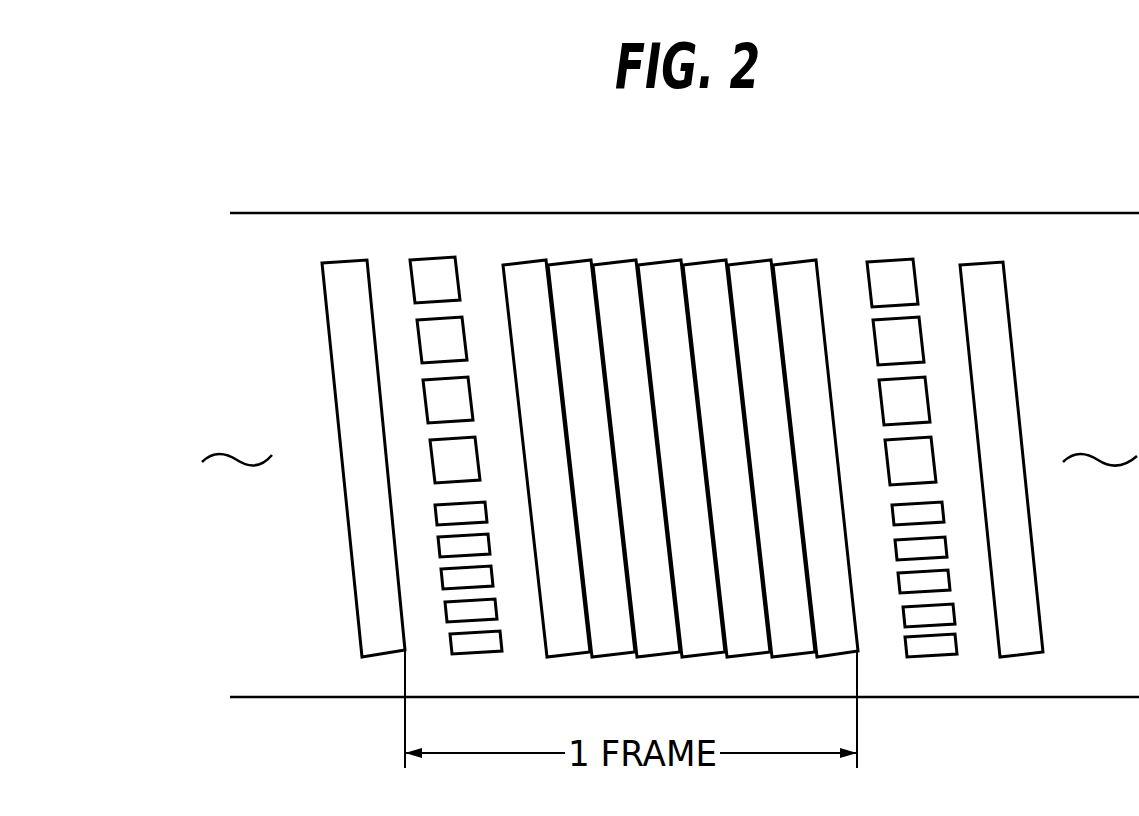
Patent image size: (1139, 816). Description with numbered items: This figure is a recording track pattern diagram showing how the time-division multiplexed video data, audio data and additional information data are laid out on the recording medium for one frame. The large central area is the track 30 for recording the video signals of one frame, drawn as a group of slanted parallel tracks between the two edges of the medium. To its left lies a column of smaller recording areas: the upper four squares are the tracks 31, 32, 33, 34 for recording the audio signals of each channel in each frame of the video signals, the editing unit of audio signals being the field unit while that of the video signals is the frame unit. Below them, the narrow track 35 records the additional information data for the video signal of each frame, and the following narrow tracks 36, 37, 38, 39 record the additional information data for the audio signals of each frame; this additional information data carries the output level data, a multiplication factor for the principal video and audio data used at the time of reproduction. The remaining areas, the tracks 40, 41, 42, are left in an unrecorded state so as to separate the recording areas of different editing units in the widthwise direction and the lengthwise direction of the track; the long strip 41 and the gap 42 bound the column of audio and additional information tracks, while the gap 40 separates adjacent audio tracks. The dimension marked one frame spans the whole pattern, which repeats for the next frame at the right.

The video signal recording track 30 is at (500, 247).
The audio signal recording track 31 is at (422, 280).
The audio signal recording track 32 is at (430, 332).
The audio signal recording track 33 is at (438, 408).
The audio signal recording track 34 is at (447, 457).
The video additional information data track 35 is at (450, 510).
The audio additional information data track 36 is at (453, 545).
The audio additional information data track 37 is at (455, 580).
The audio additional information data track 38 is at (460, 615).
The audio additional information data track 39 is at (463, 648).
The unrecorded separating track 40 is at (435, 370).
The unrecorded separating track 41 is at (385, 260).
The unrecorded separating track 42 is at (480, 260).